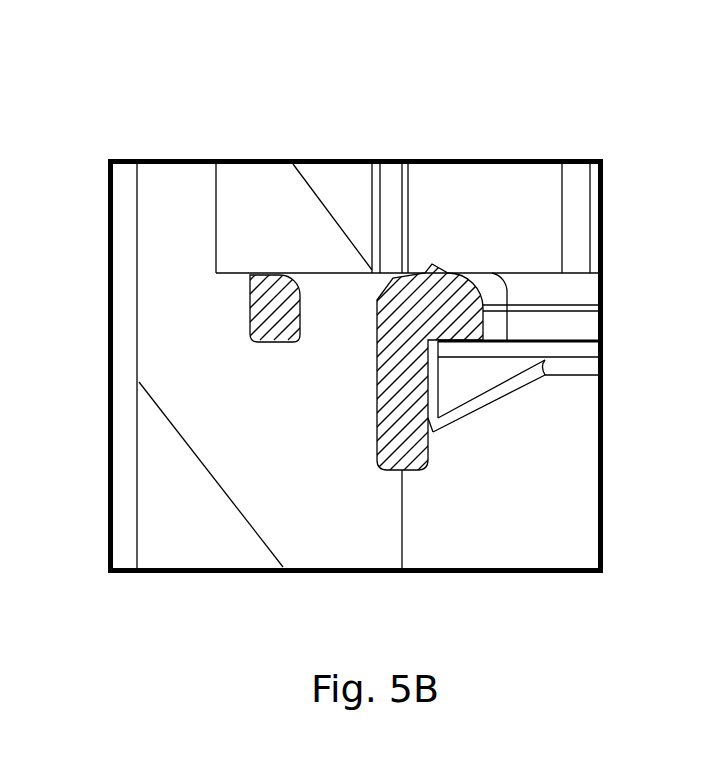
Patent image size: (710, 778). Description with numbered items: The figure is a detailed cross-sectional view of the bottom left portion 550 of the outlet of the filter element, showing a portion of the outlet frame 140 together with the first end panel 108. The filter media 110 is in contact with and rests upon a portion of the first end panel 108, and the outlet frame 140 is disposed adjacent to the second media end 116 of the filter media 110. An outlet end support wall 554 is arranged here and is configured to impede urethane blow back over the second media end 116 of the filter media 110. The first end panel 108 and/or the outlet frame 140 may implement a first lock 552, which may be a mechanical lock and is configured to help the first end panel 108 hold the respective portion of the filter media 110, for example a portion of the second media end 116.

The bottom left portion 550 is at (102, 62).
The first end panel 108 is at (166, 535).
The filter media 110 is at (479, 196).
The second media end 116 is at (562, 262).
The first lock 552 is at (272, 294).
The outlet end support wall 554 is at (403, 427).
The outlet frame 140 is at (430, 376).